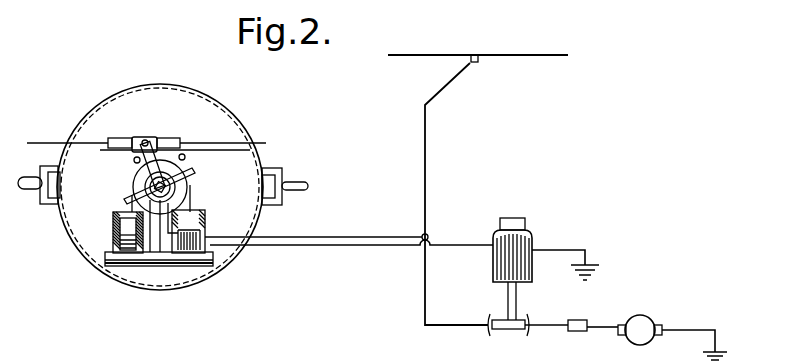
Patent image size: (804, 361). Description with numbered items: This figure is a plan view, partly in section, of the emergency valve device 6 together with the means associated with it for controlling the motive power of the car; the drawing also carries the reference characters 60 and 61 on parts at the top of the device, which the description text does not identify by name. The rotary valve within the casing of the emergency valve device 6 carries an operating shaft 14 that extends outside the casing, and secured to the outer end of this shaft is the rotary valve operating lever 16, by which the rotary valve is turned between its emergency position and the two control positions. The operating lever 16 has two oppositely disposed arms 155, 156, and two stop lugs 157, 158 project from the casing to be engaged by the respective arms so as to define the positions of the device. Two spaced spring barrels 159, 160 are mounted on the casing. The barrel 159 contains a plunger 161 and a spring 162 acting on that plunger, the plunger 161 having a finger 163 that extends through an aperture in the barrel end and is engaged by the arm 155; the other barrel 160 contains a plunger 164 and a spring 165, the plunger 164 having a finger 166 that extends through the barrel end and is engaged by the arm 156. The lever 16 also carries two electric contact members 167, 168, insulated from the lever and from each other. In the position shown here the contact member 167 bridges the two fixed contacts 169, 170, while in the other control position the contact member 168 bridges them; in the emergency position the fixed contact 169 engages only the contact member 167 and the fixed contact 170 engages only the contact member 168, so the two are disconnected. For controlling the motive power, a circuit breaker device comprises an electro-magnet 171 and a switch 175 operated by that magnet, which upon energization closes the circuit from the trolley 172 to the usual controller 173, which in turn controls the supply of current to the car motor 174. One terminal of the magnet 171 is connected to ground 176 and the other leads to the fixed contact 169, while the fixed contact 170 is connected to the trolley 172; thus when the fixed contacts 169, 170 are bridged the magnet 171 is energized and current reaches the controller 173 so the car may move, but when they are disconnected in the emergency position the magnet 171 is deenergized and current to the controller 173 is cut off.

The emergency valve device 6 is at (244, 120).
The operating shaft 14 is at (157, 188).
The operating lever 16 is at (135, 161).
The rod 60 is at (33, 143).
The pivot lever 61 is at (150, 139).
The arm 155 is at (128, 201).
The arm 156 is at (195, 172).
The stop lug 157 is at (125, 150).
The stop lug 158 is at (240, 153).
The spring barrel 159 is at (114, 233).
The spring barrel 160 is at (200, 257).
The plunger 161 is at (110, 248).
The spring 162 is at (112, 250).
The finger 163 is at (114, 222).
The plunger 164 is at (203, 219).
The spring 165 is at (215, 245).
The finger 166 is at (260, 215).
The contact member 167 is at (122, 262).
The contact member 168 is at (187, 190).
The fixed contact 169 is at (150, 255).
The fixed contact 170 is at (165, 255).
The electro-magnet 171 is at (525, 230).
The trolley 172 is at (528, 55).
The controller 173 is at (585, 320).
The car motor 174 is at (641, 328).
The switch 175 is at (507, 330).
The ground 176 is at (597, 263).